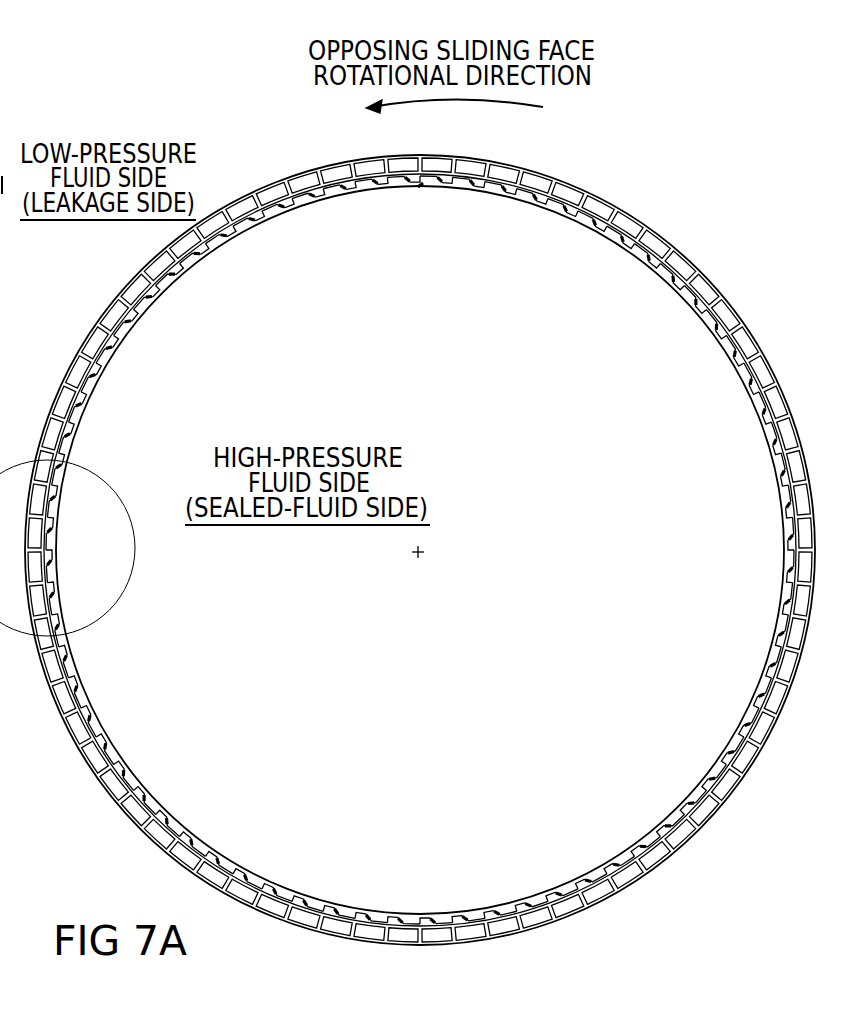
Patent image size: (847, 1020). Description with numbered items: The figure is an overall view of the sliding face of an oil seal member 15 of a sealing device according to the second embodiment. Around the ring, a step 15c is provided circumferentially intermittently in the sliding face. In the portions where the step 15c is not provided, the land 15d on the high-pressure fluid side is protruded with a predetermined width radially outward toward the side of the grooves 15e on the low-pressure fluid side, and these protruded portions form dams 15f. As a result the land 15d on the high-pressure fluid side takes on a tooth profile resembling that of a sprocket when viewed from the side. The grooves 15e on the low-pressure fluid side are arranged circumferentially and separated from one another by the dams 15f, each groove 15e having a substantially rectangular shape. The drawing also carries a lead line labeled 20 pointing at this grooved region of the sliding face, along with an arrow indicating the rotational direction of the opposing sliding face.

The oil seal member 15 is at (579, 190).
The step 15c is at (305, 183).
The land 15d is at (431, 184).
The grooves 15e is at (313, 178).
The dams 15f is at (317, 172).
The dynamic pressure generation mechanism 20 is at (673, 280).